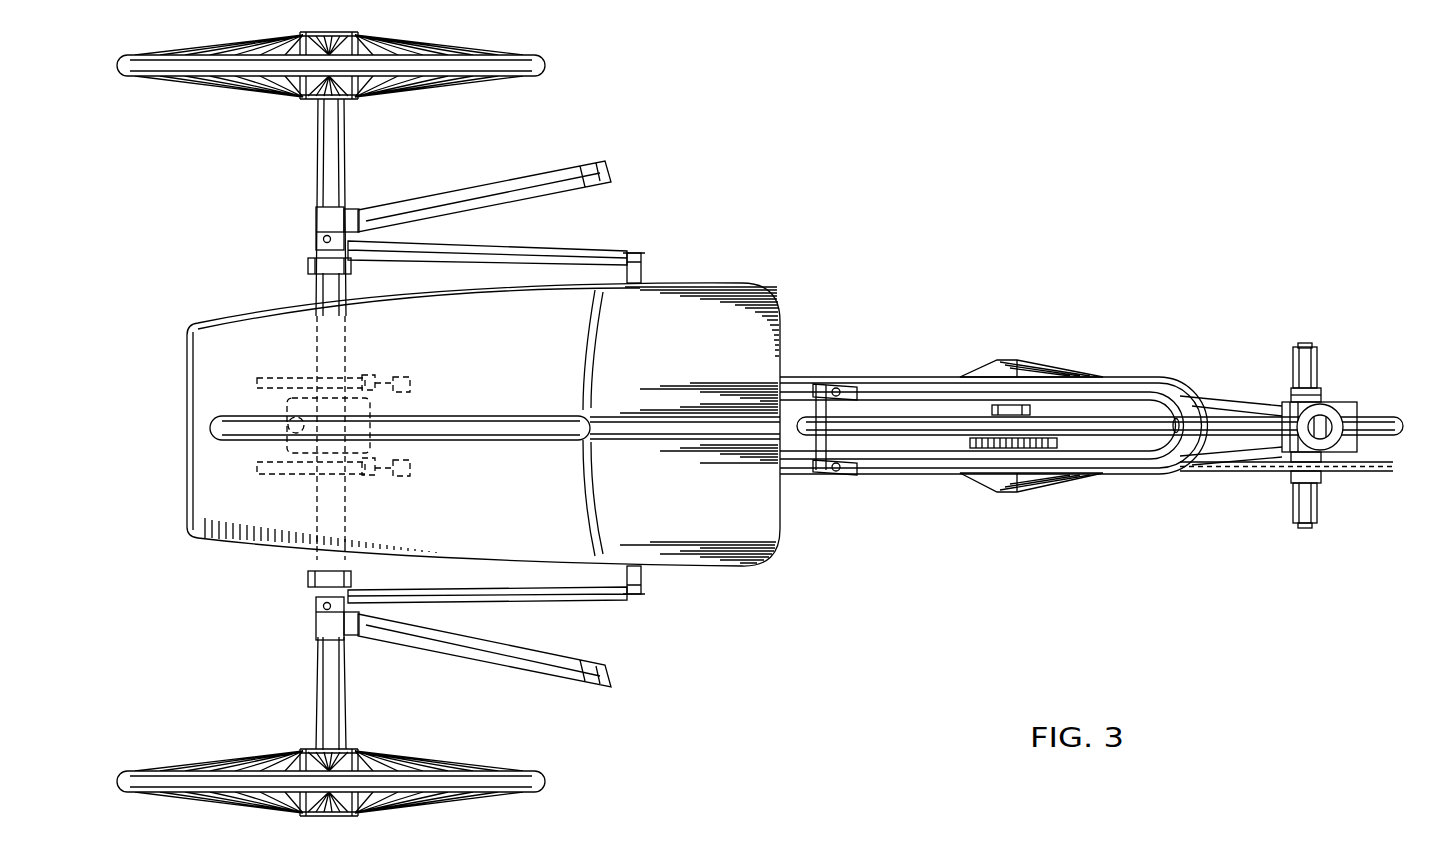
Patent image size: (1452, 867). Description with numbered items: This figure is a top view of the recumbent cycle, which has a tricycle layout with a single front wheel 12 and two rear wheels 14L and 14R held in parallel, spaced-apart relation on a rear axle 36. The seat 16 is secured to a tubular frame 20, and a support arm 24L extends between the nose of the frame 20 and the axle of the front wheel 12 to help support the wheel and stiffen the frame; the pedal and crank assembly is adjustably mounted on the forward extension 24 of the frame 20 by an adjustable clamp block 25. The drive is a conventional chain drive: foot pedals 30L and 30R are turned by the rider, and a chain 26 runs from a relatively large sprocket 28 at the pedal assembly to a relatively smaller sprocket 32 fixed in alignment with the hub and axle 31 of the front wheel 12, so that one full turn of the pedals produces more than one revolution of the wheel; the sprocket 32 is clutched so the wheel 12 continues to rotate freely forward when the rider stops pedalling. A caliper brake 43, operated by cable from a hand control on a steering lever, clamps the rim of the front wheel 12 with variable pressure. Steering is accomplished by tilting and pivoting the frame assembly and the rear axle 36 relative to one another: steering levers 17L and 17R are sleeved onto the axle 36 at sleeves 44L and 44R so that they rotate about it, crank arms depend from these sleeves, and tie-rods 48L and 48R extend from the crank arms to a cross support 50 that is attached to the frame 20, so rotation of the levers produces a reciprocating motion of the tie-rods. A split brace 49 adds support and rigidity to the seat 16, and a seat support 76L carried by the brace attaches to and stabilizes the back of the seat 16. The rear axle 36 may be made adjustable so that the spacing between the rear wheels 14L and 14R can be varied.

The front wheel 12 is at (1393, 420).
The left rear wheel 14L is at (545, 70).
The right rear wheel 14R is at (545, 788).
The seat 16 is at (751, 303).
The left steering lever 17L is at (503, 190).
The right steering lever 17R is at (446, 648).
The tubular frame 20 is at (1190, 385).
The forward extension 24 is at (1226, 414).
The left support arm 24L is at (1198, 395).
The adjustable clamp block 25 is at (1330, 408).
The chain 26 is at (1226, 482).
The large sprocket 28 is at (1394, 468).
The left foot pedal 30L is at (1318, 355).
The right foot pedal 30R is at (1318, 522).
The hub and axle 31 is at (1012, 410).
The small sprocket 32 is at (966, 446).
The rear axle 36 is at (344, 153).
The caliper brake 43 is at (850, 473).
The left sleeve 44L is at (333, 217).
The right sleeve 44R is at (330, 622).
The left tie-rod 48L is at (541, 252).
The right tie-rod 48R is at (567, 596).
The split brace 49 is at (404, 380).
The cross support 50 is at (641, 272).
The left seat support 76L is at (265, 372).